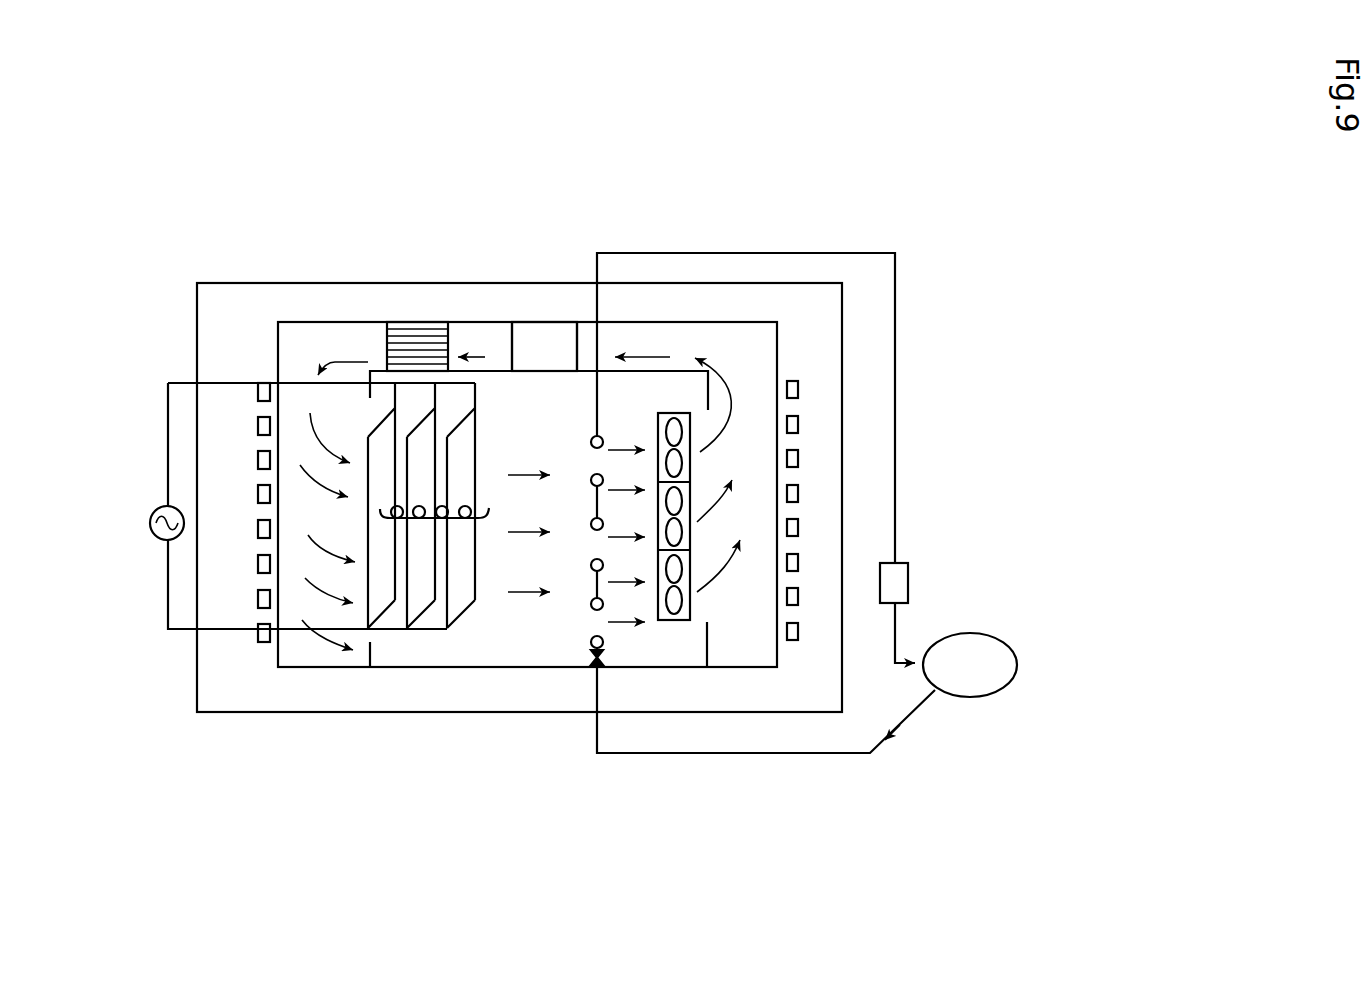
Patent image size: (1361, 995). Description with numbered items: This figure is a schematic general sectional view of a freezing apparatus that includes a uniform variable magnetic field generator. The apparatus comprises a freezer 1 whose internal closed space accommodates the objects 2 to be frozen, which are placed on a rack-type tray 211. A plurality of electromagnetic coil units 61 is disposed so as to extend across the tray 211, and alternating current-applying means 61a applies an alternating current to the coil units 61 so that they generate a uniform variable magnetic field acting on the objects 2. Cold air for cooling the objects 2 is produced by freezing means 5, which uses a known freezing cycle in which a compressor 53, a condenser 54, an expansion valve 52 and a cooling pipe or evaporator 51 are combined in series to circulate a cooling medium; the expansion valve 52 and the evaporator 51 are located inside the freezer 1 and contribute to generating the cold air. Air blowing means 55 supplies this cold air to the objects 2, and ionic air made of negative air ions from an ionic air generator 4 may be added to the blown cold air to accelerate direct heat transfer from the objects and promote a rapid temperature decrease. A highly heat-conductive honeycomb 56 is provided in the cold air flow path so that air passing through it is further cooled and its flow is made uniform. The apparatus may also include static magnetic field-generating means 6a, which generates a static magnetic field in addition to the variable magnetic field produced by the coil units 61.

The freezer 1 is at (247, 279).
The objects to be frozen 2 is at (469, 506).
The ionic air generator 4 is at (548, 335).
The freezing means 5 is at (935, 708).
The static magnetic field-generating means 6a is at (799, 389).
The cooling pipe (evaporator) 51 is at (591, 642).
The expansion valve 52 is at (595, 667).
The compressor 53 is at (908, 572).
The condenser 54 is at (977, 634).
The air blowing means 55 is at (690, 473).
The honeycomb 56 is at (425, 335).
The electromagnetic coil units 61 is at (372, 432).
The alternating current-applying means 61a is at (149, 519).
The rack-type tray 211 is at (398, 518).